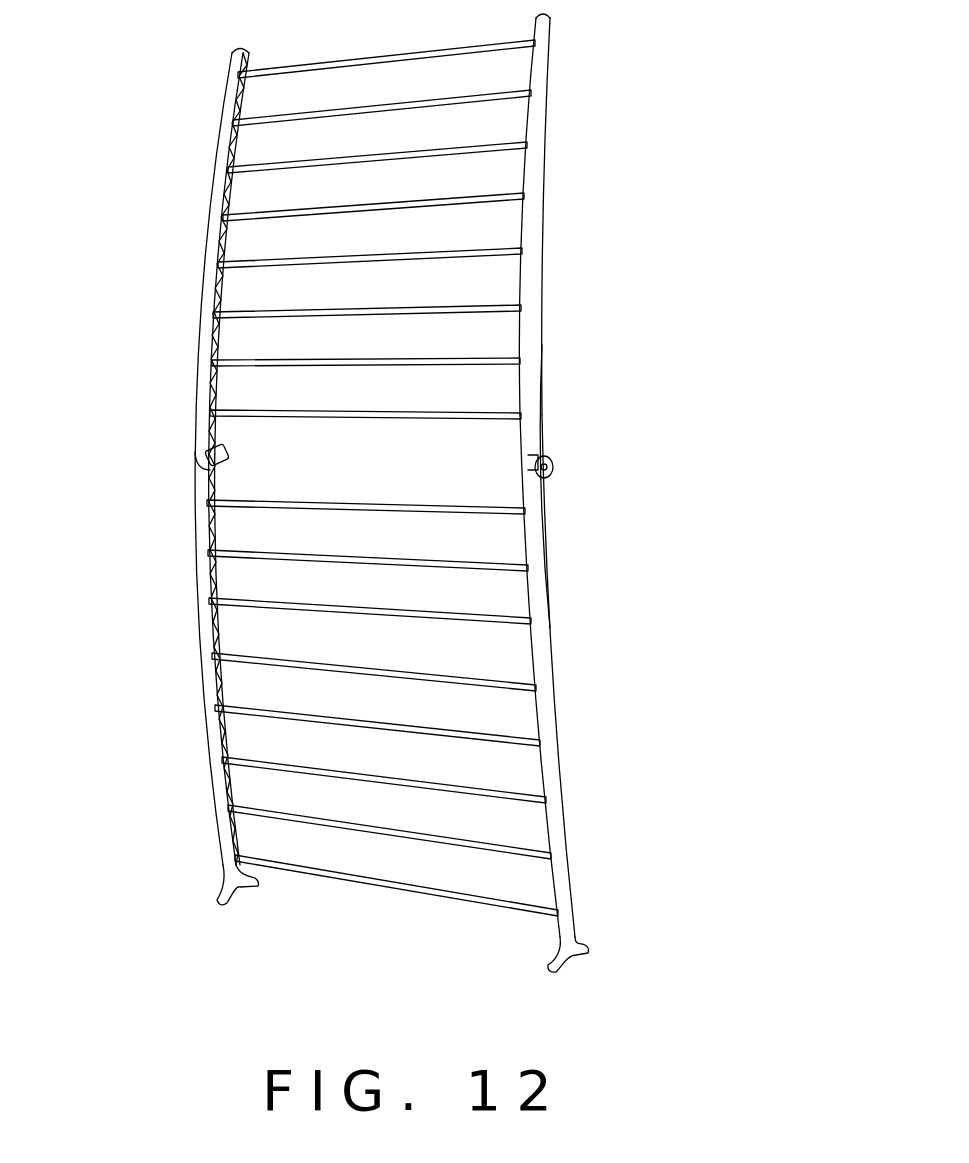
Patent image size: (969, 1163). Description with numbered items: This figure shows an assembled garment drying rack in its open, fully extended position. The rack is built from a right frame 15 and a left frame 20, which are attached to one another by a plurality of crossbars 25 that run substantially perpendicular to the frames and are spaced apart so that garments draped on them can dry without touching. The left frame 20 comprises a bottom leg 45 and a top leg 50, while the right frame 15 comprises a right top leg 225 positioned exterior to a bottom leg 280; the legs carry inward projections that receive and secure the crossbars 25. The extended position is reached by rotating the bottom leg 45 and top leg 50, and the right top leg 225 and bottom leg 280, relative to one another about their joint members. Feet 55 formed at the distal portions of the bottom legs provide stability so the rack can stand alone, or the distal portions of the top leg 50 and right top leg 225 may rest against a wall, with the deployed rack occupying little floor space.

The right frame 15 is at (613, 503).
The left frame 20 is at (176, 621).
The crossbars 25 is at (488, 626).
The bottom leg 45 is at (203, 732).
The top leg 50 is at (198, 252).
The feet 55 is at (216, 904).
The right top leg 225 is at (556, 180).
The bottom leg 280 is at (568, 749).